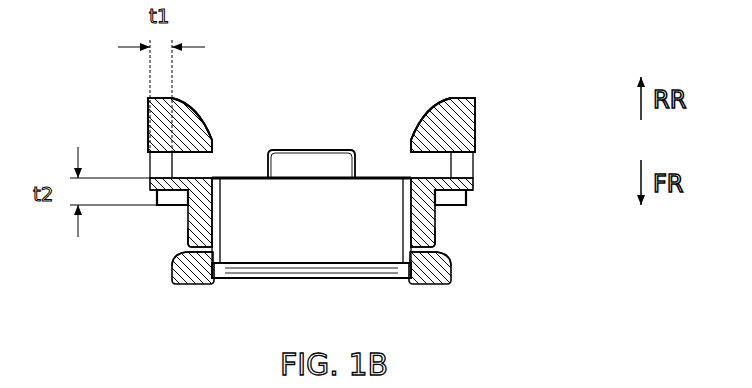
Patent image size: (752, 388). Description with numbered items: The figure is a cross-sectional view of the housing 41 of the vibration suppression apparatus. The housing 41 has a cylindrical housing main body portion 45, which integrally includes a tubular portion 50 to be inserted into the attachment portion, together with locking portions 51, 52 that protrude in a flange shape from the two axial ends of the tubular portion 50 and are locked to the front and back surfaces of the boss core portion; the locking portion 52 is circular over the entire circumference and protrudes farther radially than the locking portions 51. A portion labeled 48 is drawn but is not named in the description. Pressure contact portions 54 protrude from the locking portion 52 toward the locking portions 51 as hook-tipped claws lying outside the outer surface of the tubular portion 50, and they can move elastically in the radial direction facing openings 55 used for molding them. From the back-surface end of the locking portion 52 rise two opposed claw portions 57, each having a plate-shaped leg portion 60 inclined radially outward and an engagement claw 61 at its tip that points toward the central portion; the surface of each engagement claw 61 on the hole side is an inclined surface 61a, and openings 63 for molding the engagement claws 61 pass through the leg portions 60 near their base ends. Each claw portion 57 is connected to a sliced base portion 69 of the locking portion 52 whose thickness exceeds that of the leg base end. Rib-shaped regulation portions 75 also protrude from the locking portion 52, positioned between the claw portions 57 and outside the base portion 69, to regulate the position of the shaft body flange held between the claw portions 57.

The housing 41 is at (299, 83).
The housing main body portion 45 is at (436, 217).
The side wall 48 is at (217, 215).
The tubular portion 50 is at (197, 216).
The locking portion 51 is at (181, 285).
The locking portion 52 is at (468, 182).
The pressure contact portion 54 is at (193, 235).
The opening 55 is at (195, 252).
The claw portion 57 is at (152, 105).
The leg portion 60 is at (160, 162).
The engagement claw 61 is at (208, 132).
The inclined surface 61a is at (207, 105).
The opening 63 is at (155, 128).
The base portion 69 is at (468, 196).
The regulation portion 75 is at (313, 149).